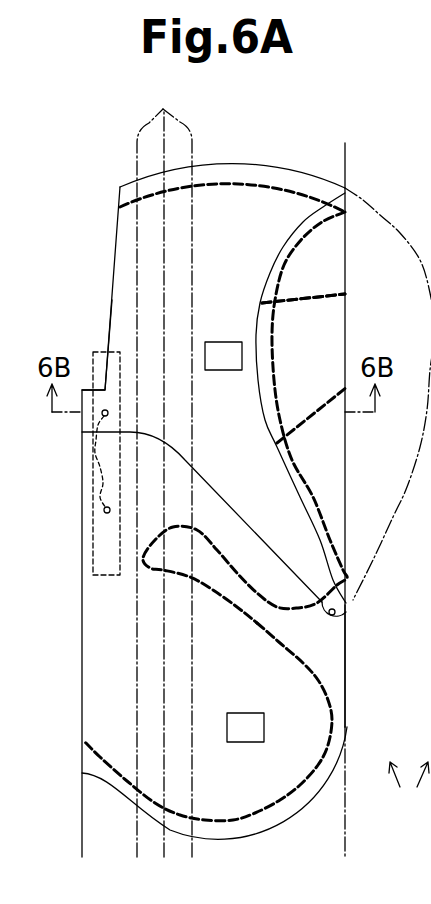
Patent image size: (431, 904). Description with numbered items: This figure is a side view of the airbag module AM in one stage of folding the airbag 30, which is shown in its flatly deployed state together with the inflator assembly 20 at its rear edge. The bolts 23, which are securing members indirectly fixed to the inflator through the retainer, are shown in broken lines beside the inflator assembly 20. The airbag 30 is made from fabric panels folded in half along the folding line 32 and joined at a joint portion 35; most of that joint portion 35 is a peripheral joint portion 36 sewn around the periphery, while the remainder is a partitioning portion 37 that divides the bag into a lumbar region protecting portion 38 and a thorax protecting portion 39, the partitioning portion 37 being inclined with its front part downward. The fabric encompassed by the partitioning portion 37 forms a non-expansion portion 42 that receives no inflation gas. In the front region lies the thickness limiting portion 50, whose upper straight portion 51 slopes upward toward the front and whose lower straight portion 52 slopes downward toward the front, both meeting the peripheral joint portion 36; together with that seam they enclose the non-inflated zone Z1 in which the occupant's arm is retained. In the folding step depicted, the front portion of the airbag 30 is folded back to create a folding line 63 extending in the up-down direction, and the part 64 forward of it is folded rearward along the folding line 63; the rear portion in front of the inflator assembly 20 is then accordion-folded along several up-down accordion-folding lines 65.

The inflator assembly 20 is at (100, 359).
The bolts 23 is at (83, 462).
The airbag 30 is at (82, 668).
The folding line 32 is at (82, 803).
The joint portion 35 is at (215, 542).
The peripheral joint portion 36 is at (270, 812).
The partitioning portion 37 is at (270, 606).
The lumbar region protecting portion 38 is at (245, 728).
The thorax protecting portion 39 is at (223, 357).
The non-expansion portion 42 is at (337, 664).
The thickness limiting portion 50 is at (392, 321).
The upper straight portion 51 is at (333, 298).
The lower straight portion 52 is at (323, 414).
The folding line 63 is at (347, 160).
The part forward of the folding line 64 is at (283, 254).
The accordion-folding lines 65 is at (163, 109).
The non-inflated zone Z1 is at (318, 353).
The airbag module AM is at (410, 791).